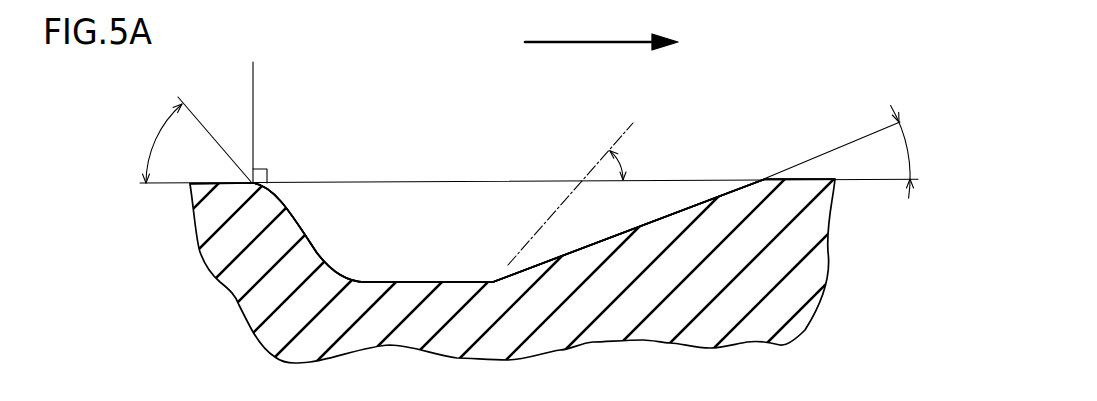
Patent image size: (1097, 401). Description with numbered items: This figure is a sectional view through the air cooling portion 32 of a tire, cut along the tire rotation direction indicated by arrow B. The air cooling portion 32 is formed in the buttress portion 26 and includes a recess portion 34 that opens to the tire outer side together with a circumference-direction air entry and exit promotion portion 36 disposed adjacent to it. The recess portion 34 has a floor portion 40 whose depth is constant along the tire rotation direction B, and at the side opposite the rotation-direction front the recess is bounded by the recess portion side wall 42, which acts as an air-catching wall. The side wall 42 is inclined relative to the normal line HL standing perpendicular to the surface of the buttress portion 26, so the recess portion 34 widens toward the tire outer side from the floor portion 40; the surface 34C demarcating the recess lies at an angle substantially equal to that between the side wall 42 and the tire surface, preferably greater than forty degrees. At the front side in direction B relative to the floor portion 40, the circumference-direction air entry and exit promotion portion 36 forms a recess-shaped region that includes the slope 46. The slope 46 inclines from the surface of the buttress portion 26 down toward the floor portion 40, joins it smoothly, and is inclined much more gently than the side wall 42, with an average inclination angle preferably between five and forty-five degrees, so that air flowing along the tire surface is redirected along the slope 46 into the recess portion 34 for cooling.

The buttress portion 26 is at (208, 183).
The air cooling portion 32 is at (795, 128).
The recess portion 34 is at (435, 279).
The surface 34C is at (529, 240).
The circumference-direction air entry and exit promotion portion 36 is at (612, 228).
The floor portion 40 is at (453, 281).
The recess portion side wall 42 is at (298, 226).
The slope 46 is at (707, 197).
The normal line HL is at (253, 118).
The tire rotation direction B is at (588, 43).